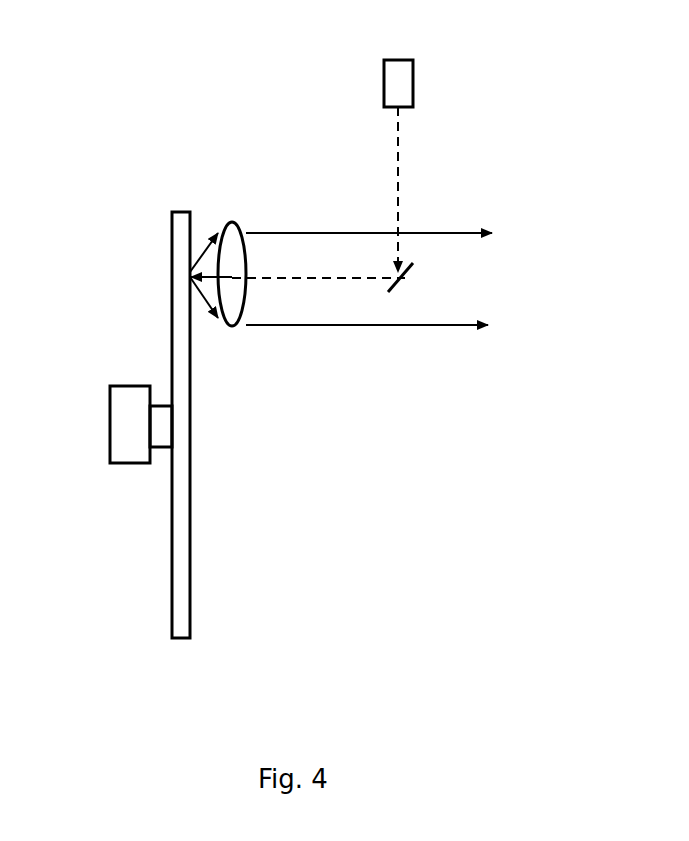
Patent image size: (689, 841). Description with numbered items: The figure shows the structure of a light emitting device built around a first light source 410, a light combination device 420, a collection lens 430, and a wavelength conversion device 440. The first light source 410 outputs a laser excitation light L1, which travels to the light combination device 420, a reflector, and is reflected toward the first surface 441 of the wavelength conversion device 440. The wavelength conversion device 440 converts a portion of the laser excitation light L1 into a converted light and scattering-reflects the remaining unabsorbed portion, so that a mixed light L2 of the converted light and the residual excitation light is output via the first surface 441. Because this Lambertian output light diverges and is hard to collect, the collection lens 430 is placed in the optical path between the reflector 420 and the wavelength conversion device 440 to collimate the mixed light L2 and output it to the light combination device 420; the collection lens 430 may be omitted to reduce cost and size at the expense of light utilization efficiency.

The first light source 410 is at (398, 84).
The light combination device 420 is at (405, 278).
The collection lens 430 is at (232, 222).
The wavelength conversion device 440 is at (180, 240).
The first surface 441 is at (190, 520).
The laser excitation light L1 is at (398, 165).
The mixed light L2 is at (363, 325).